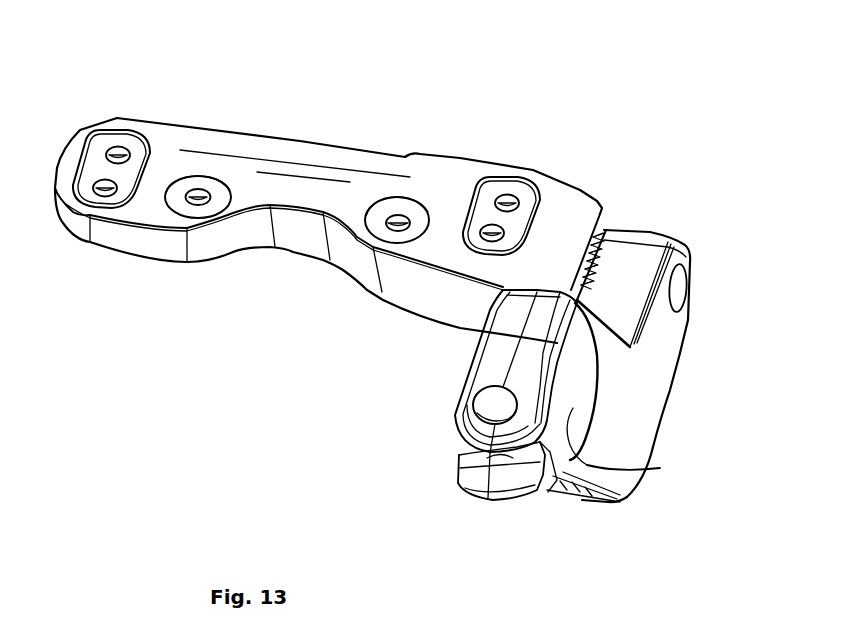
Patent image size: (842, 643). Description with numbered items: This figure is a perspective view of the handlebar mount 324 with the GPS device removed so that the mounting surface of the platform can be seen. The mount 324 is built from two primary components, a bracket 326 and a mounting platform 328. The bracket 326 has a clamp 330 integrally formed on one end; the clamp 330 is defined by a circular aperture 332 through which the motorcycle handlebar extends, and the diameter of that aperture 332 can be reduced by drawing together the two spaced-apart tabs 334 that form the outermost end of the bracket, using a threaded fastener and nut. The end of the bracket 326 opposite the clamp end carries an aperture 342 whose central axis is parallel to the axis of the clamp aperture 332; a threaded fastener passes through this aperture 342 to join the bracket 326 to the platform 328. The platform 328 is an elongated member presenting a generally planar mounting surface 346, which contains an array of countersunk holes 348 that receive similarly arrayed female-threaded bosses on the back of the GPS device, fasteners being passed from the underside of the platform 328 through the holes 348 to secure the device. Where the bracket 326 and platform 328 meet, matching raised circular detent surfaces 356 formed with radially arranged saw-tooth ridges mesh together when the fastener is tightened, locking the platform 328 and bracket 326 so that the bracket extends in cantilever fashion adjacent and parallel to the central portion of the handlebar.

The mount 324 is at (596, 173).
The mounting platform 328 is at (460, 157).
The countersunk holes 348 is at (395, 202).
The mounting surface 346 is at (456, 188).
The detent surfaces 356 is at (603, 226).
The bracket 326 is at (650, 408).
The aperture 342 is at (687, 277).
The circular aperture 332 is at (650, 470).
The clamp 330 is at (467, 352).
The tabs 334 is at (460, 441).